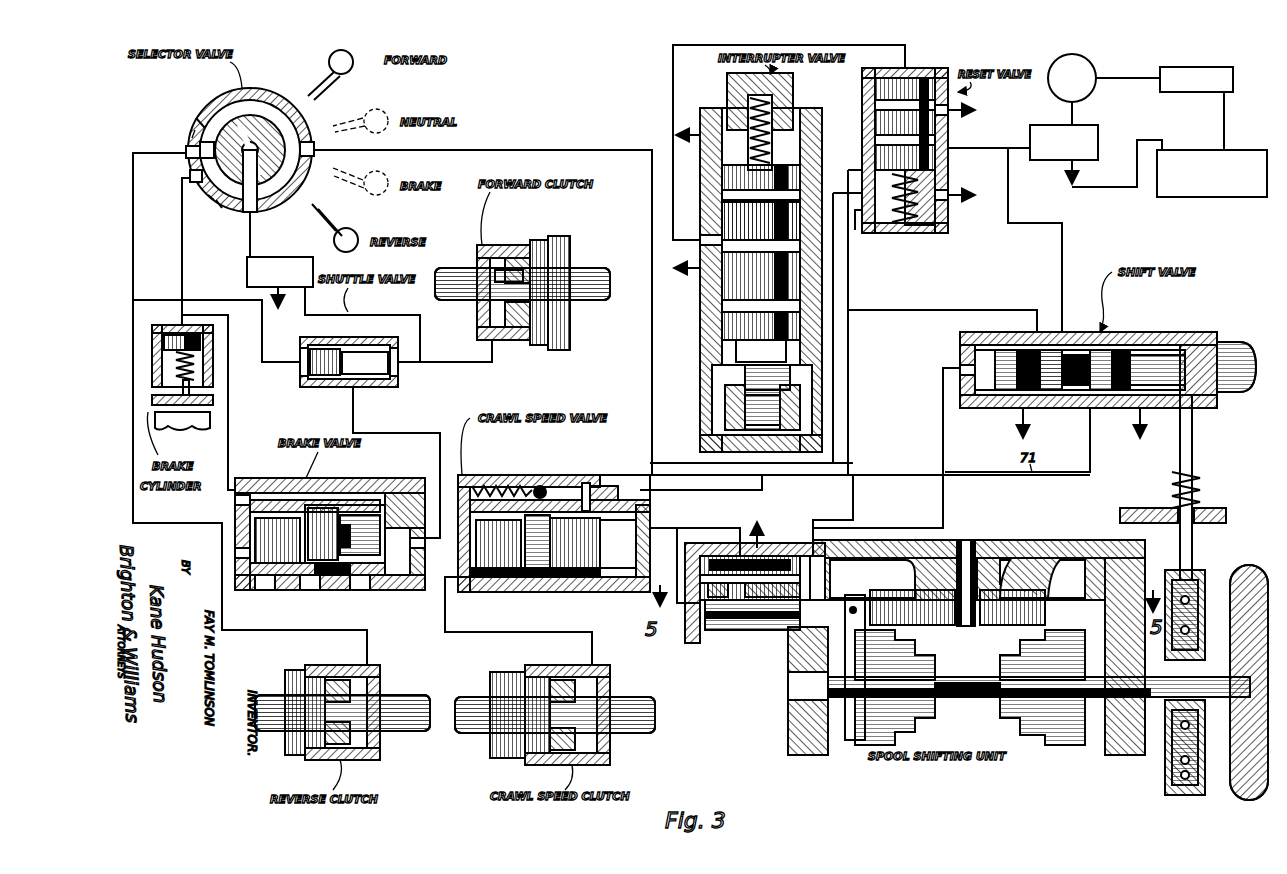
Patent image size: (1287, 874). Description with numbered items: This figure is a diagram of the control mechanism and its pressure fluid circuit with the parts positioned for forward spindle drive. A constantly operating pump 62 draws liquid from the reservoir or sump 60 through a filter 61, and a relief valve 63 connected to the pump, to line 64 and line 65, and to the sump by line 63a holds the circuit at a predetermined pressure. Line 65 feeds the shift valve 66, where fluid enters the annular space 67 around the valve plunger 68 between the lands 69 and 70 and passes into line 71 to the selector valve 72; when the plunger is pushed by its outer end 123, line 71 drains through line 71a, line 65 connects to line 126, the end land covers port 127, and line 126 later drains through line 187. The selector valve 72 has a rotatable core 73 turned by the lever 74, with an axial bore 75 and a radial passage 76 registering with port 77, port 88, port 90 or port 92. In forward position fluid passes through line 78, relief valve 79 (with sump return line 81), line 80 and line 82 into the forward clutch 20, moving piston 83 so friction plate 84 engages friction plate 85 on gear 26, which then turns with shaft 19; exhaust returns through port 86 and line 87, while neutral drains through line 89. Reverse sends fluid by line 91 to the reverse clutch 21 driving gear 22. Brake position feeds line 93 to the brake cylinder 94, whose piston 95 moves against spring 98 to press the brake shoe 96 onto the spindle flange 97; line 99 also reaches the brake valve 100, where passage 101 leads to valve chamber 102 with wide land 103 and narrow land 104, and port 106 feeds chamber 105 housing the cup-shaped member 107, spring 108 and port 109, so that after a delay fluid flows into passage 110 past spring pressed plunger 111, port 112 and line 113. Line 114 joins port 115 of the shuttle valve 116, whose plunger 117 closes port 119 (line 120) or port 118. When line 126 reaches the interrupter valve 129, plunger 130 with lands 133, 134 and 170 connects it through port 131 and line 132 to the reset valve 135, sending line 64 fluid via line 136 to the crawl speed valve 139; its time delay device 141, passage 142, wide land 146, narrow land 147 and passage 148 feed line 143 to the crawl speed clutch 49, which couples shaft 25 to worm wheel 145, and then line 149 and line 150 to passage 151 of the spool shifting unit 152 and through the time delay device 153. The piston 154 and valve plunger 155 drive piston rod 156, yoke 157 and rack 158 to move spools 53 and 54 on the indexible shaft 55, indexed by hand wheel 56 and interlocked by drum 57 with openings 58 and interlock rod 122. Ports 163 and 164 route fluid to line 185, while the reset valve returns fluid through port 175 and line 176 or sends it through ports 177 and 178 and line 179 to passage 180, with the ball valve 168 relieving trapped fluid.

The shaft 19 is at (602, 274).
The forward clutch 20 is at (524, 284).
The reverse clutch 21 is at (342, 702).
The gear 22 is at (292, 672).
The shaft 25 is at (650, 704).
The gear 26 is at (570, 258).
The crawl speed clutch 49 is at (556, 704).
The spool 53 is at (925, 655).
The spool 54 is at (1000, 655).
The indexible shaft 55 is at (1025, 687).
The hand wheel 56 is at (1250, 566).
The interlock drum 57 is at (1205, 780).
The openings 58 is at (1180, 776).
The reservoir or sump 60 is at (1198, 152).
The filter 61 is at (1200, 68).
The pump 62 is at (1088, 72).
The relief valve 63 is at (1090, 140).
The line 63a is at (1110, 187).
The hydraulic circuit line 64 is at (992, 148).
The hydraulic circuit line 65 is at (1032, 224).
The shift valve 66 is at (1036, 443).
The annular space 67 is at (1056, 350).
The valve plunger 68 is at (1162, 345).
The land 69 is at (1050, 410).
The land 70 is at (1110, 410).
The line 71 is at (585, 150).
The line 71a is at (1145, 418).
The selector valve 72 is at (255, 92).
The core or plug 73 is at (275, 95).
The lever 74 is at (338, 90).
The bore 75 is at (222, 110).
The passage 76 is at (300, 170).
The port 77 is at (260, 212).
The line 78 is at (252, 230).
The relief valve 79 is at (305, 258).
The line 80 is at (365, 358).
The sump return line 81 is at (282, 306).
The line 82 is at (470, 362).
The piston 83 is at (512, 246).
The friction plate 84 is at (536, 240).
The friction plate 85 is at (542, 328).
The port 86 is at (200, 118).
The line 87 is at (192, 135).
The port 88 is at (212, 200).
The line 89 is at (215, 212).
The port 90 is at (188, 156).
The line 91 is at (140, 152).
The port 92 is at (190, 180).
The line 93 is at (181, 240).
The brake cylinder 94 is at (172, 334).
The piston 95 is at (152, 352).
The brake shoe 96 is at (213, 396).
The annular flange 97 is at (180, 430).
The spring 98 is at (200, 355).
The line 99 is at (228, 438).
The brake valve 100 is at (310, 543).
The passage 101 is at (268, 480).
The valve chamber 102 is at (398, 590).
The wide land 103 is at (404, 512).
The narrow land 104 is at (360, 590).
The chamber 105 is at (265, 590).
The port 106 is at (236, 500).
The cup-shaped member 107 is at (300, 480).
The spring 108 is at (236, 552).
The port 109 is at (340, 486).
The passage 110 is at (418, 590).
The spring pressed plunger 111 is at (296, 588).
The port 112 is at (335, 588).
The line 113 is at (310, 590).
The line 114 is at (440, 433).
The port 115 is at (360, 388).
The shuttle valve 116 is at (392, 342).
The plunger 117 is at (326, 342).
The port 118 is at (398, 362).
The port 119 is at (306, 364).
The line 120 is at (226, 300).
The interlock rod 122 is at (1192, 445).
The outer end 123 is at (1250, 352).
The line 126 is at (948, 310).
The port 127 is at (960, 364).
The interrupter valve 129 is at (767, 262).
The plunger 130 is at (735, 305).
The port 131 is at (708, 240).
The line 132 is at (673, 92).
The land 133 is at (745, 262).
The land 134 is at (790, 145).
The reset valve 135 is at (914, 136).
The line 136 is at (850, 265).
The crawl speed valve 139 is at (554, 524).
The time delay device 141 is at (498, 478).
The passage 142 is at (476, 588).
The line 143 is at (512, 632).
The worm wheel 145 is at (510, 672).
The wide land 146 is at (576, 588).
The narrow land 147 is at (526, 588).
The passage 148 is at (605, 492).
The line 149 is at (702, 475).
The line 150 is at (690, 570).
The passage 151 is at (690, 612).
The spool shifting unit 152 is at (792, 662).
The time delay device 153 is at (800, 380).
The piston 154 is at (722, 632).
The valve plunger 155 is at (720, 556).
The piston rod 156 is at (768, 590).
The yoke 157 is at (868, 632).
The rack 158 is at (1040, 598).
The port 163 is at (730, 590).
The port 164 is at (745, 545).
The ball valve 168 is at (540, 486).
The land 170 is at (761, 351).
The port 175 is at (948, 192).
The line 176 is at (962, 196).
The port 177 is at (948, 112).
The port 178 is at (870, 128).
The line 179 is at (850, 372).
The passage 180 is at (826, 592).
The line 185 is at (712, 530).
The line 187 is at (1015, 420).